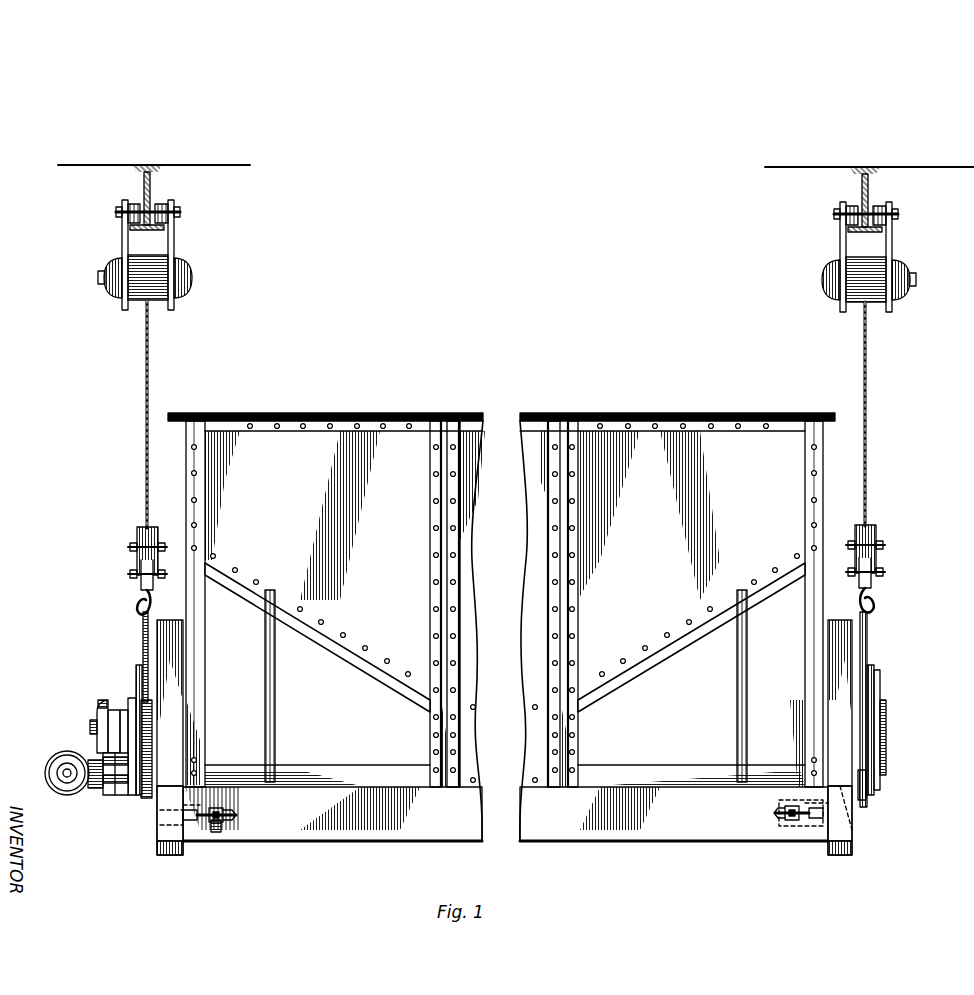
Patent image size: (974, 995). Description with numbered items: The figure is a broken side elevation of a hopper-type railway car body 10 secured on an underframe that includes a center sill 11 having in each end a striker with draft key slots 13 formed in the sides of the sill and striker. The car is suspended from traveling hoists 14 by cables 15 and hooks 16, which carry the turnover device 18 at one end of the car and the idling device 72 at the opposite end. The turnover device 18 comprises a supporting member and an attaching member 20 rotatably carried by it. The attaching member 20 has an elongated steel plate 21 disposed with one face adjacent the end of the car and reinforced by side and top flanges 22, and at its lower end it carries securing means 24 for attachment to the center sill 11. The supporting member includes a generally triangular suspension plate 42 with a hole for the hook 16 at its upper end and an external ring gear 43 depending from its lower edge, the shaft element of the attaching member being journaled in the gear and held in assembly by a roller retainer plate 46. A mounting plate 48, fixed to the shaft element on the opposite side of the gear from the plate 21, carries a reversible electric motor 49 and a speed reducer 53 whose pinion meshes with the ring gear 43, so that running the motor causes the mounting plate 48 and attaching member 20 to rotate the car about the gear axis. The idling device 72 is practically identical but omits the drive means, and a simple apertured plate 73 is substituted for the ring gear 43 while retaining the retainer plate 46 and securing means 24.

The railway car body 10 is at (348, 410).
The center sill 11 is at (350, 842).
The draft key slots 13 is at (222, 810).
The traveling hoists 14 is at (178, 296).
The cables 15 is at (145, 397).
The hooks 16 is at (136, 606).
The turnover device 18 is at (136, 662).
The attaching member 20 is at (170, 620).
The elongated steel plate 21 is at (158, 838).
The side and top flanges 22 is at (168, 855).
The securing means 24 is at (216, 832).
The suspension plate 42 is at (870, 642).
The ring gear 43 is at (146, 802).
The roller retainer plate 46 is at (886, 768).
The mounting plate 48 is at (133, 800).
The reversible electric motor 49 is at (48, 785).
The speed reducer 53 is at (96, 722).
The idling device 72 is at (882, 692).
The apertured plate 73 is at (866, 800).